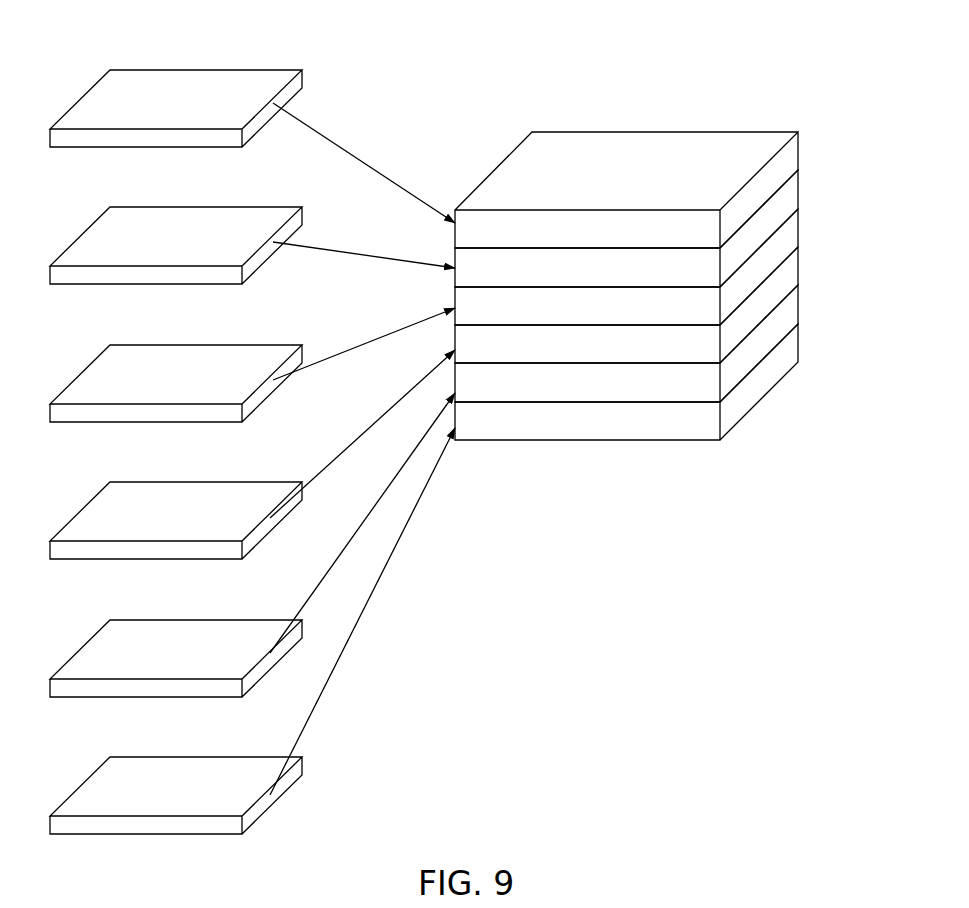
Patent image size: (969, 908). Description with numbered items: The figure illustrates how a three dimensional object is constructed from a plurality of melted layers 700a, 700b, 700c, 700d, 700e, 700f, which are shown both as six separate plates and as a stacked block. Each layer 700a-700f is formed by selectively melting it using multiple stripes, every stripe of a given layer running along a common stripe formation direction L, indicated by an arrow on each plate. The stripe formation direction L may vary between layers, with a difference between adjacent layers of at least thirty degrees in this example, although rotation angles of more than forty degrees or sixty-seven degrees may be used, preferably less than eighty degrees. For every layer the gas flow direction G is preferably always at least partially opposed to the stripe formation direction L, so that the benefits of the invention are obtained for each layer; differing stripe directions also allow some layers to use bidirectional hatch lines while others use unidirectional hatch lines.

The gas flow direction G is at (250, 57).
The stripe formation direction L is at (133, 93).
The melted layer 700a is at (798, 150).
The melted layer 700b is at (798, 188).
The melted layer 700c is at (798, 226).
The melted layer 700d is at (798, 264).
The melted layer 700e is at (798, 302).
The melted layer 700f is at (798, 340).